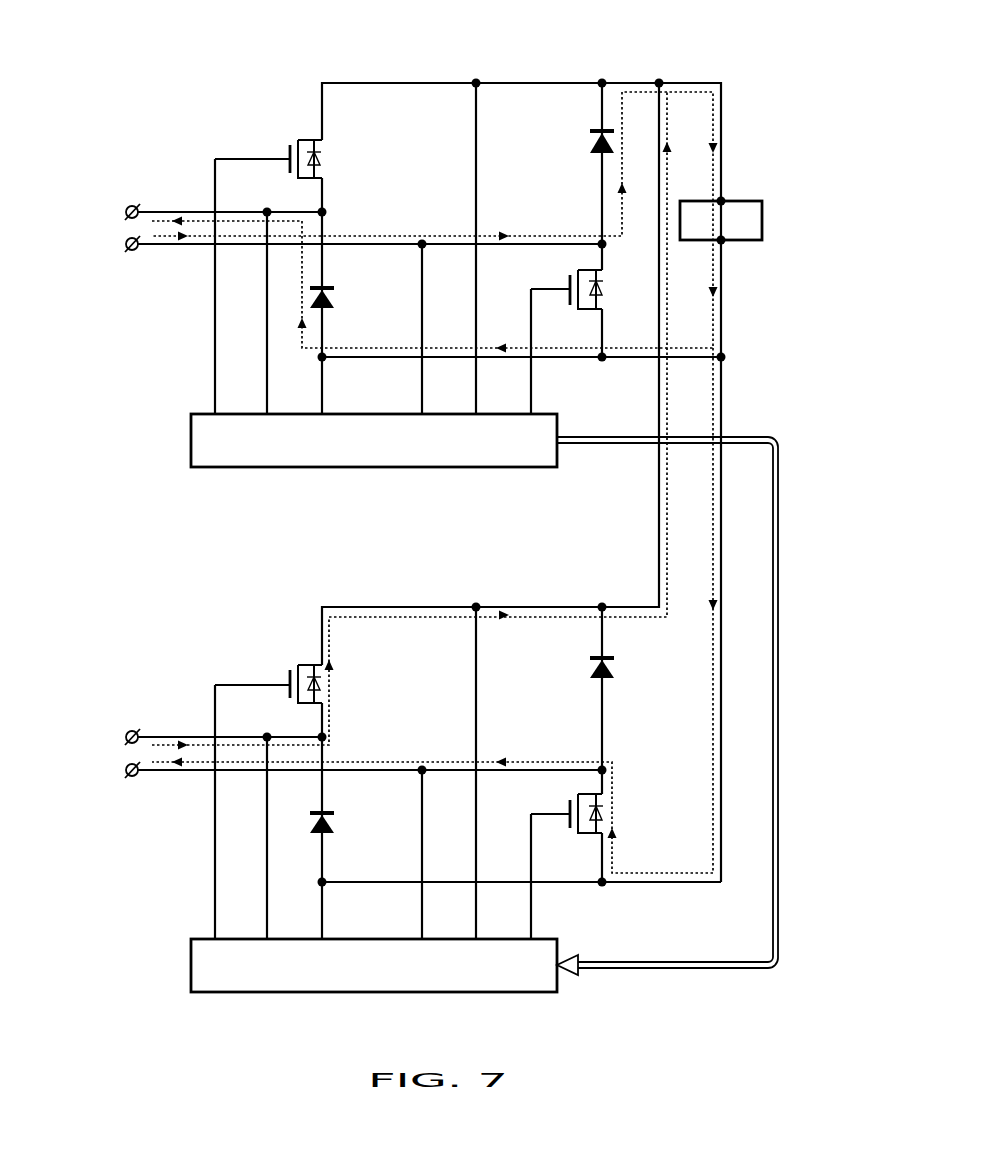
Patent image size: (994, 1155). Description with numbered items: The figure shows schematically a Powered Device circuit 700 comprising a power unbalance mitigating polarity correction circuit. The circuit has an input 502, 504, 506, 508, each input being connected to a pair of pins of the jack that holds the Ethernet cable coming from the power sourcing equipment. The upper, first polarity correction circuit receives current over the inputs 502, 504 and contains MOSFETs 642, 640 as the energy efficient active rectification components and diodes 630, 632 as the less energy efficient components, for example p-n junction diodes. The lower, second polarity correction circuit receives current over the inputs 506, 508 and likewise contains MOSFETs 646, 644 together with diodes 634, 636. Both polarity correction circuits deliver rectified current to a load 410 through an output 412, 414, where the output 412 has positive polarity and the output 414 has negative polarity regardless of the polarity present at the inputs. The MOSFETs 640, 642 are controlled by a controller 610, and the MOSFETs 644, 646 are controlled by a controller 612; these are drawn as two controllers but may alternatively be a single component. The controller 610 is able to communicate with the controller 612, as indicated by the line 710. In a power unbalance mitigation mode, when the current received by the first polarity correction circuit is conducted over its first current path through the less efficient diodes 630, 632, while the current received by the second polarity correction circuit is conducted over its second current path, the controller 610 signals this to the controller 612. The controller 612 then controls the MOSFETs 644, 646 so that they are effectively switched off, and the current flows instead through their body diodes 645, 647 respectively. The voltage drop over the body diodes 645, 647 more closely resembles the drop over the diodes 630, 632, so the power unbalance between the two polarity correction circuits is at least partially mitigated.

The Powered Device circuit 700 is at (115, 84).
The input 502 is at (125, 210).
The input 504 is at (125, 246).
The input 506 is at (125, 735).
The input 508 is at (125, 771).
The MOSFET 642 is at (303, 140).
The diode 630 is at (590, 138).
The diode 632 is at (336, 298).
The MOSFET 640 is at (570, 278).
The load 410 is at (763, 218).
The output 412 is at (722, 200).
The output 414 is at (722, 242).
The controller 610 is at (191, 438).
The line 710 is at (777, 437).
The MOSFET 646 is at (303, 665).
The body diode 647 is at (324, 686).
The diode 634 is at (590, 663).
The diode 636 is at (336, 823).
The MOSFET 644 is at (570, 803).
The body diode 645 is at (605, 815).
The controller 612 is at (191, 963).